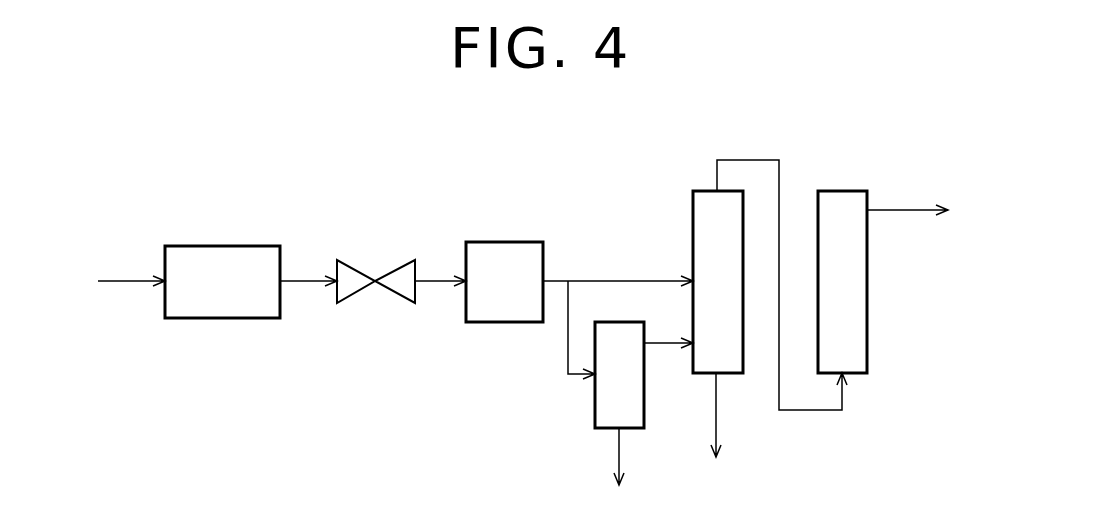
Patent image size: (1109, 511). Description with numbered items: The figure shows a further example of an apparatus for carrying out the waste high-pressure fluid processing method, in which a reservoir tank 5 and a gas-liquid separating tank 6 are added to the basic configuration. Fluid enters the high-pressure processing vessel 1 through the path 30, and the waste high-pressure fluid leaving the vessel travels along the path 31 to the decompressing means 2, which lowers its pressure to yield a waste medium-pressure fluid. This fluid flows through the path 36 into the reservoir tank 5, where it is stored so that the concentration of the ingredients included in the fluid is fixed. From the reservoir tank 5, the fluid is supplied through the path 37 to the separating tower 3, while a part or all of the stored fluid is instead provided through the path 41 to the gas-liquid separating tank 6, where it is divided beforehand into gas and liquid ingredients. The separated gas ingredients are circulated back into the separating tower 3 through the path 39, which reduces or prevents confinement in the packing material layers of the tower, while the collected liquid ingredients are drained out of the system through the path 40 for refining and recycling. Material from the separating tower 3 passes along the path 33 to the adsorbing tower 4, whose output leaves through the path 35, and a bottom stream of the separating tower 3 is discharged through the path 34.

The high-pressure processing vessel 1 is at (217, 246).
The decompressing means 2 is at (373, 274).
The separating tower 3 is at (693, 204).
The adsorbing tower 4 is at (868, 358).
The reservoir tank 5 is at (496, 242).
The gas-liquid separating tank 6 is at (595, 413).
The path 30 is at (118, 281).
The path 31 is at (307, 281).
The path 33 is at (779, 173).
The path 34 is at (716, 394).
The path 35 is at (906, 210).
The path 36 is at (437, 281).
The path 37 is at (620, 281).
The path 39 is at (669, 341).
The path 40 is at (620, 452).
The path 41 is at (568, 355).